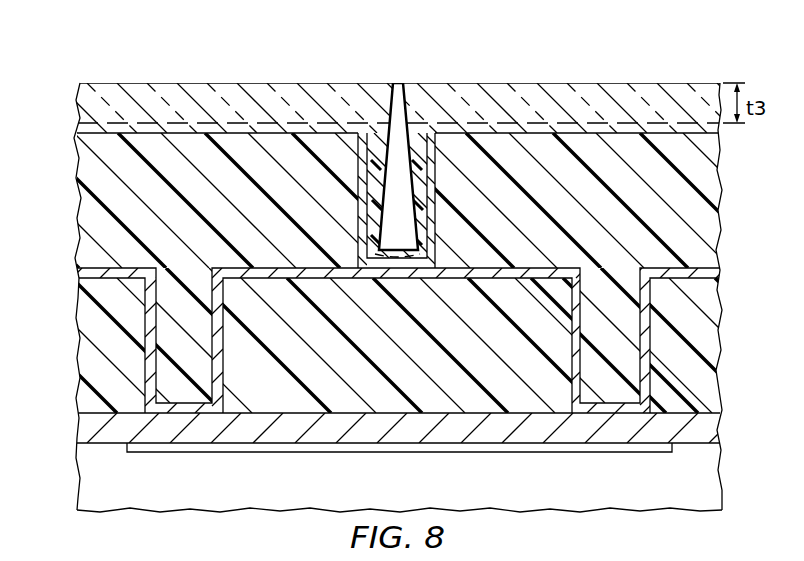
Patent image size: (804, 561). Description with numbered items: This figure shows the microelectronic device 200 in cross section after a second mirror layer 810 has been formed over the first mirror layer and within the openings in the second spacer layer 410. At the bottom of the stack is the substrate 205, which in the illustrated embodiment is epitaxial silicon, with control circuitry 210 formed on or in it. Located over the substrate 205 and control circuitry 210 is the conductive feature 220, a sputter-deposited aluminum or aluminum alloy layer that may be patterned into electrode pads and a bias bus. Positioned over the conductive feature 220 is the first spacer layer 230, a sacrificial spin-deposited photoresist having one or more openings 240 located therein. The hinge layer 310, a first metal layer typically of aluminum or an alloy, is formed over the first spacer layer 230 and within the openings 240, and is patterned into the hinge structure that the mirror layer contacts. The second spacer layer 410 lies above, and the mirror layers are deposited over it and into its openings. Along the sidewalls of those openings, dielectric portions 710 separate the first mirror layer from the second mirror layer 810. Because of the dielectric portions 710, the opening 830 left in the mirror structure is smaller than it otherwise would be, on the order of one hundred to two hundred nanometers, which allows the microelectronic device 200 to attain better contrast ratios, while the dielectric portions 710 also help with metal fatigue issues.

The microelectronic device 200 is at (221, 60).
The substrate 205 is at (413, 491).
The control circuitry 210 is at (399, 447).
The conductive feature 220 is at (408, 428).
The first spacer layer 230 is at (402, 345).
The openings 240 is at (385, 335).
The hinge layer 310 is at (399, 340).
The second spacer layer 410 is at (402, 200).
The dielectric portions 710 is at (392, 200).
The second mirror layer 810 is at (397, 108).
The opening 830 is at (397, 170).